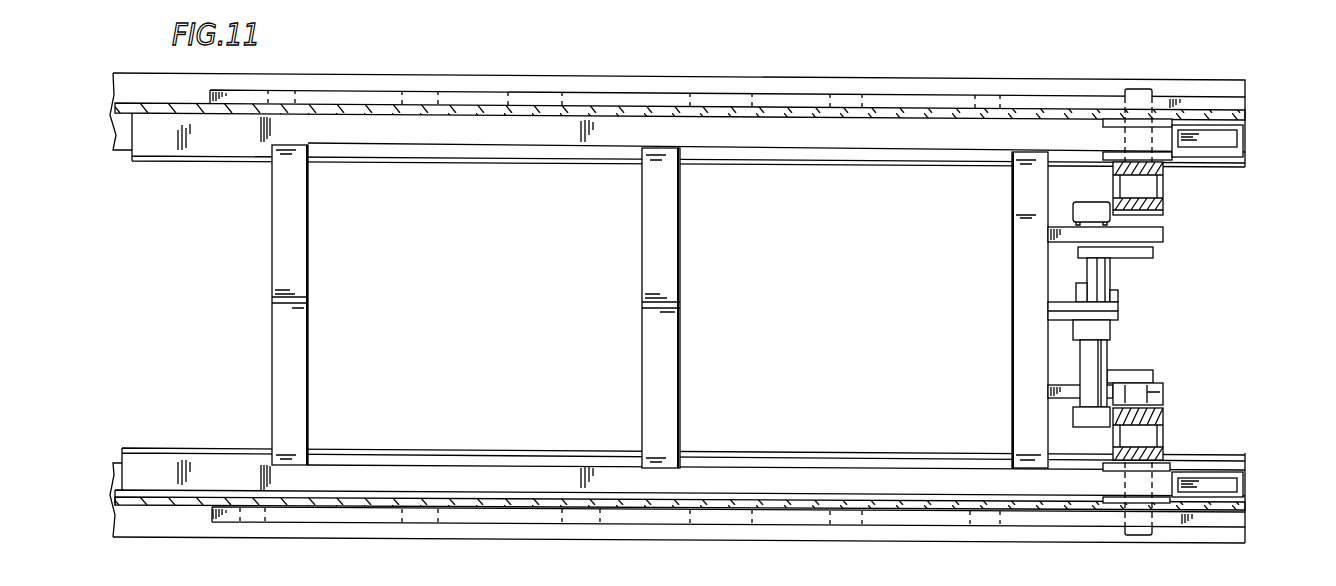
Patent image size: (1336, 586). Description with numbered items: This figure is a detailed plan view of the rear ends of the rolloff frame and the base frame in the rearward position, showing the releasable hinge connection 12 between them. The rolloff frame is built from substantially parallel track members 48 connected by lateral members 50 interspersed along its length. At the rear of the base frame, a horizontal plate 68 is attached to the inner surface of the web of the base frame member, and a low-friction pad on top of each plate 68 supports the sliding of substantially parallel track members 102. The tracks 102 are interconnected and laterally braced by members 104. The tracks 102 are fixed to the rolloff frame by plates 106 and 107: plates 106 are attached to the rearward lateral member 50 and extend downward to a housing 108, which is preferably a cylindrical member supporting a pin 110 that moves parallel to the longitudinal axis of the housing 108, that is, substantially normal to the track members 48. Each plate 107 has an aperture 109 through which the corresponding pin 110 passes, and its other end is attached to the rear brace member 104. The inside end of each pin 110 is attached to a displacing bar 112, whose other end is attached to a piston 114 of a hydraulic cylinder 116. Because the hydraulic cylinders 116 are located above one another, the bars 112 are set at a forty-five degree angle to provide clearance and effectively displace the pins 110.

The printing unit 12 is at (135, 437).
The track member 48 is at (677, 519).
The lateral member 50 is at (686, 329).
The horizontal plate 68 is at (203, 450).
The track member 102 is at (492, 135).
The brace member 104 is at (302, 373).
The plate 106 is at (1163, 203).
The plate 107 is at (1163, 232).
The housing 108 is at (1163, 437).
The aperture 109 is at (1163, 393).
The pin 110 is at (1138, 88).
The displacing bar 112 is at (1142, 253).
The piston 114 is at (1080, 265).
The hydraulic cylinder 116 is at (1080, 362).